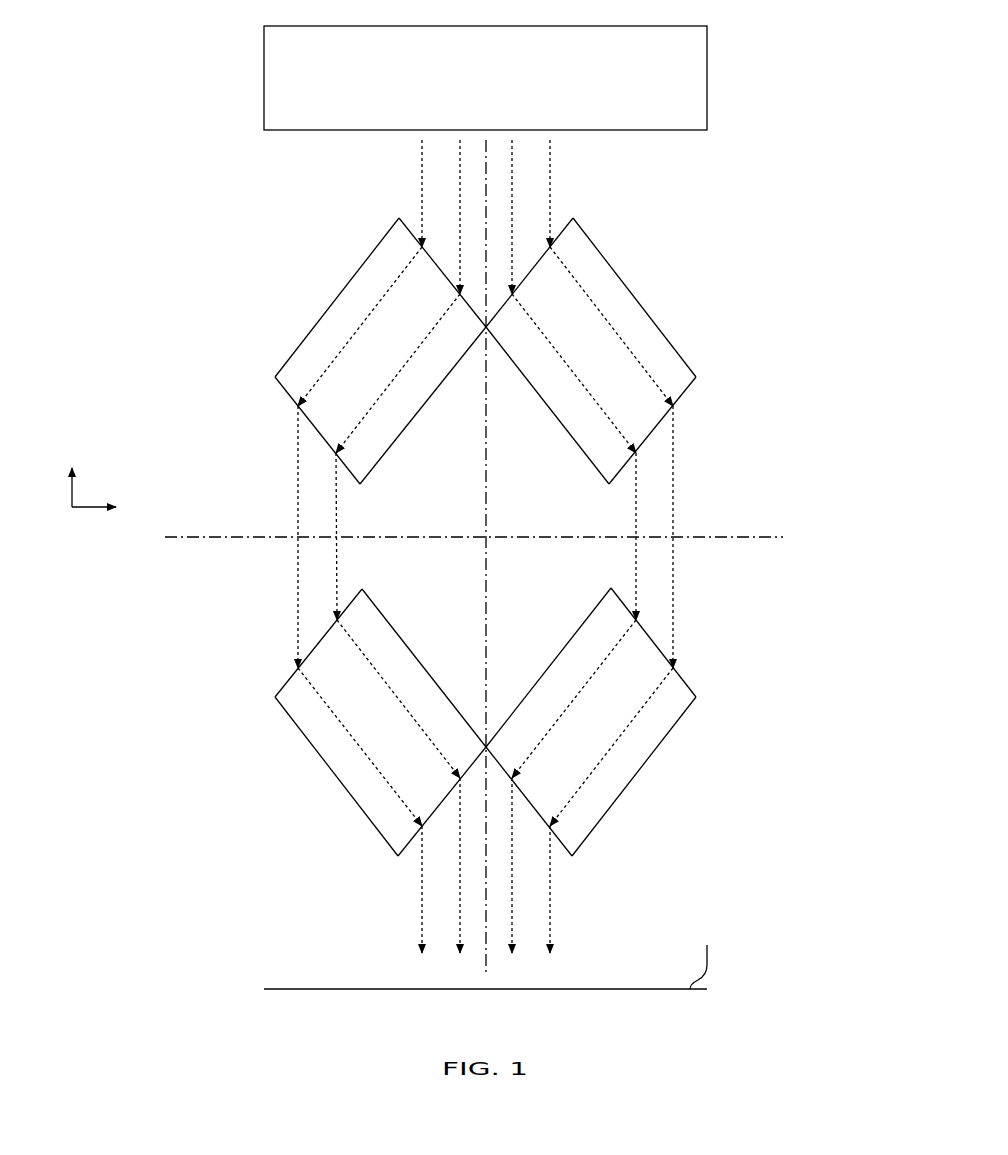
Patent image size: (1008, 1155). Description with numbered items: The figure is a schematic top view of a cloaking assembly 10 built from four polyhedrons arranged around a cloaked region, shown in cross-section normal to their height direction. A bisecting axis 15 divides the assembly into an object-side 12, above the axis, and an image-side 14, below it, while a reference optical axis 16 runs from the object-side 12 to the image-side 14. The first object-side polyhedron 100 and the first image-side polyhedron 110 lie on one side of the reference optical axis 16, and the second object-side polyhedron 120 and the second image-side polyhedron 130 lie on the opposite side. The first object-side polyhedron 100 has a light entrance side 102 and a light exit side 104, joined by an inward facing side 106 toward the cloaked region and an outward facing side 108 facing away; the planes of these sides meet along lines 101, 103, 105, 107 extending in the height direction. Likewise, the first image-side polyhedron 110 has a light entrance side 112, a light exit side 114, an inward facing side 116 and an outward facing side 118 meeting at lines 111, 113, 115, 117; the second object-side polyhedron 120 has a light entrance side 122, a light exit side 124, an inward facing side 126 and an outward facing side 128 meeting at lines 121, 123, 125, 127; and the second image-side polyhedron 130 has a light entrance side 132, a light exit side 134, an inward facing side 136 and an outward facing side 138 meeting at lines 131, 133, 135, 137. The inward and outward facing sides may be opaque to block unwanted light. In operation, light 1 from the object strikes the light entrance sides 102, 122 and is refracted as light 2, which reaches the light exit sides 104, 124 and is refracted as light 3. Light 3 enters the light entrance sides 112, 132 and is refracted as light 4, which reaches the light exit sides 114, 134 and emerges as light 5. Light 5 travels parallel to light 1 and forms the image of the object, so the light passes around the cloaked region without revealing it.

The cloaking assembly 10 is at (780, 92).
The object-side 12 is at (757, 287).
The image-side 14 is at (775, 678).
The bisecting axis 15 is at (773, 537).
The reference optical axis 16 is at (486, 158).
The light 1 is at (459, 158).
The light 2 is at (410, 353).
The light 3 is at (337, 520).
The light 4 is at (370, 667).
The light 5 is at (459, 855).
The first object-side polyhedron 100 is at (697, 247).
The line 101 is at (490, 330).
The light entrance side 102 is at (573, 216).
The line 103 is at (569, 222).
The light exit side 104 is at (698, 380).
The line 105 is at (694, 375).
The inward facing side 106 is at (548, 406).
The line 107 is at (609, 482).
The outward facing side 108 is at (637, 300).
The first image-side polyhedron 110 is at (672, 772).
The line 111 is at (609, 593).
The light entrance side 112 is at (697, 693).
The line 113 is at (693, 700).
The light exit side 114 is at (562, 847).
The line 115 is at (573, 848).
The inward facing side 116 is at (563, 648).
The line 117 is at (488, 748).
The outward facing side 118 is at (683, 715).
The second object-side polyhedron 120 is at (218, 248).
The line 121 is at (484, 328).
The light entrance side 122 is at (399, 216).
The line 123 is at (403, 222).
The light exit side 124 is at (275, 378).
The line 125 is at (277, 377).
The inward facing side 126 is at (416, 418).
The line 127 is at (361, 483).
The outward facing side 128 is at (345, 287).
The second image-side polyhedron 130 is at (252, 812).
The line 131 is at (360, 593).
The light entrance side 132 is at (275, 695).
The line 133 is at (280, 698).
The light exit side 134 is at (408, 853).
The line 135 is at (398, 848).
The inward facing side 136 is at (403, 642).
The line 137 is at (484, 746).
The outward facing side 138 is at (308, 742).